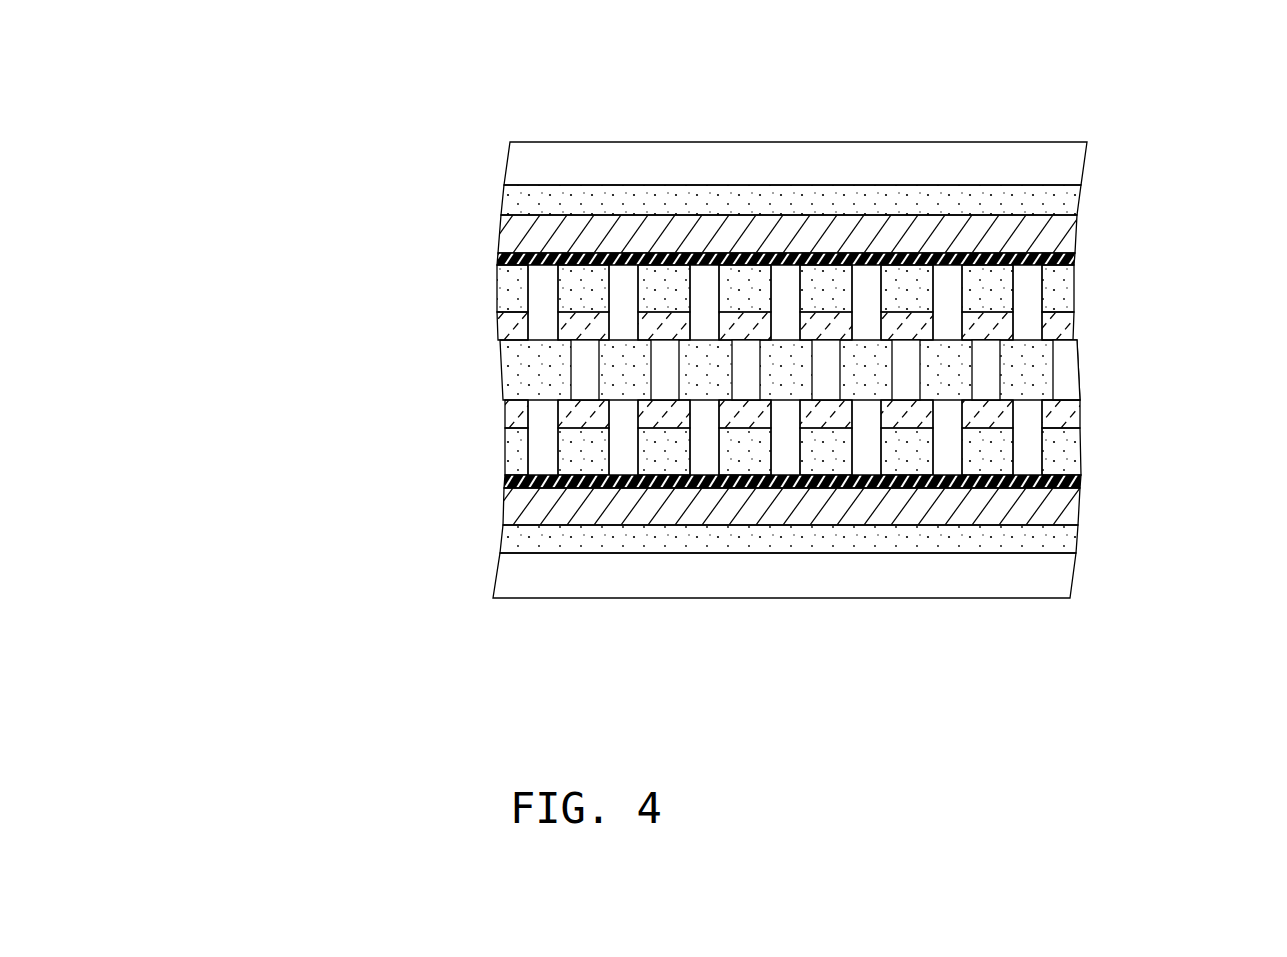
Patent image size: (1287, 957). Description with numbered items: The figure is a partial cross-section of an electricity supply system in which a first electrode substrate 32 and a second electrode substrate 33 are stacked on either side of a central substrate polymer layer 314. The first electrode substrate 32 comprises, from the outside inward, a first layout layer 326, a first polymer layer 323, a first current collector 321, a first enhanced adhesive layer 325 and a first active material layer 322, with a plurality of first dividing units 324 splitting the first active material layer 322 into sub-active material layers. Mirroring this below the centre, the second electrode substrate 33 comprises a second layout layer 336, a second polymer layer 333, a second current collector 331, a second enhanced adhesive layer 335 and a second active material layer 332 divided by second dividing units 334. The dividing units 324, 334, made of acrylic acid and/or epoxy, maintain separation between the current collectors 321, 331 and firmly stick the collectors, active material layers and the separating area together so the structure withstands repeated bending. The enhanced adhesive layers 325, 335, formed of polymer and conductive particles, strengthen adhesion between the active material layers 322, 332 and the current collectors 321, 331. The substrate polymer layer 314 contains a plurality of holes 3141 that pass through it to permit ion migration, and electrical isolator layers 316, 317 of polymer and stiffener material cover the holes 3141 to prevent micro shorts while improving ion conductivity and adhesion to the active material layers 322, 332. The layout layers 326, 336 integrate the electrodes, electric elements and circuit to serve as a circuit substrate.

The first electrode substrate 32 is at (689, 207).
The first current collector 321 is at (1068, 234).
The first active material layer 322 is at (1070, 286).
The first polymer layer 323 is at (1077, 198).
The first dividing unit 324 is at (543, 283).
The first enhanced adhesive layer 325 is at (1073, 258).
The first layout layer 326 is at (1078, 163).
The second electrode substrate 33 is at (689, 454).
The second current collector 331 is at (1070, 513).
The second active material layer 332 is at (1073, 458).
The second polymer layer 333 is at (1070, 539).
The second dividing unit 334 is at (547, 453).
The second enhanced adhesive layer 335 is at (1080, 480).
The second layout layer 336 is at (1060, 583).
The substrate polymer layer 314 is at (833, 389).
The holes 3141 is at (580, 375).
The electrical isolator layer 316 is at (1072, 327).
The electrical isolator layer 317 is at (1077, 422).